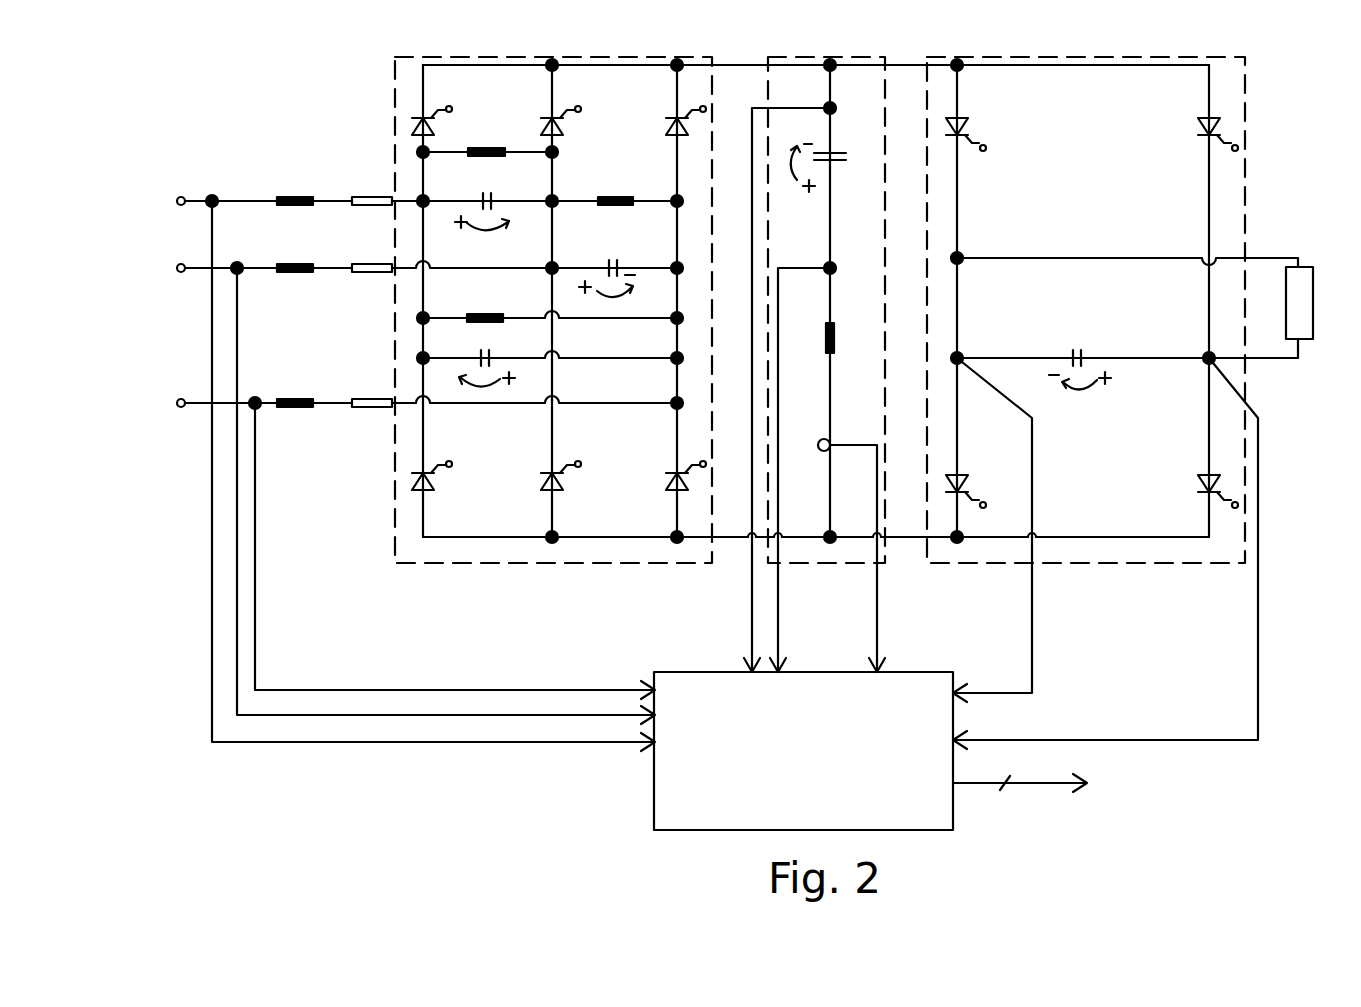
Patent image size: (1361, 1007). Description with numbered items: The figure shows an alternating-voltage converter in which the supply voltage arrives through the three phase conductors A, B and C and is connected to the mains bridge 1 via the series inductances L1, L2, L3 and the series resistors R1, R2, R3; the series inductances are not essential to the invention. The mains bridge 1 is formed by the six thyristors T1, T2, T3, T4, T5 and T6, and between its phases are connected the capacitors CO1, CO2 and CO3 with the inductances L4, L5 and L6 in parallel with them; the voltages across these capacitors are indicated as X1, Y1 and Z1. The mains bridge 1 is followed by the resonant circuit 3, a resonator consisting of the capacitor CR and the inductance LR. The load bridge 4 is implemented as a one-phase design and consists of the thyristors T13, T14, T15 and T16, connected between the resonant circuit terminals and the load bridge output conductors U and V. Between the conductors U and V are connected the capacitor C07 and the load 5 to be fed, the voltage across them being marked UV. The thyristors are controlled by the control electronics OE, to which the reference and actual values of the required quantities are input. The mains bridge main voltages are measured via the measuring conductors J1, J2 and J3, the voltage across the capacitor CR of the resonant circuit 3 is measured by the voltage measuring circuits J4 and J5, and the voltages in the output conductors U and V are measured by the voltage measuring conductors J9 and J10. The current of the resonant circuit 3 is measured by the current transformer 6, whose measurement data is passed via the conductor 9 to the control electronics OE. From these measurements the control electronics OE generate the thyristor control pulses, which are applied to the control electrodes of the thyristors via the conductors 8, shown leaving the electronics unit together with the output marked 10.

The mains bridge 1 is at (393, 80).
The resonant circuit 3 is at (802, 56).
The load bridge 4 is at (1247, 135).
The load 5 is at (1313, 310).
The current transformer 6 is at (829, 440).
The conductors 8 is at (1027, 782).
The conductor 9 is at (878, 590).
The control output signal lines 10 is at (992, 802).
The phase conductor A is at (246, 202).
The phase conductor B is at (245, 269).
The phase conductor C is at (245, 404).
The series inductance L1 is at (294, 186).
The series inductance L2 is at (294, 253).
The series inductance L3 is at (294, 388).
The series resistor R1 is at (386, 186).
The series resistor R2 is at (371, 253).
The series resistor R3 is at (371, 388).
The thyristor T1 is at (418, 122).
The thyristor T2 is at (548, 127).
The thyristor T3 is at (672, 127).
The thyristor T4 is at (416, 478).
The thyristor T5 is at (546, 480).
The thyristor T6 is at (671, 480).
The thyristor T13 is at (968, 128).
The thyristor T14 is at (1198, 130).
The thyristor T15 is at (968, 484).
The thyristor T16 is at (1198, 487).
The inductance L4 is at (485, 137).
The inductance L5 is at (614, 186).
The inductance L6 is at (484, 304).
The capacitor CO1 is at (481, 198).
The capacitor CO2 is at (606, 262).
The capacitor CO3 is at (497, 360).
The capacitor voltage X1 is at (482, 240).
The capacitor voltage Y1 is at (607, 302).
The capacitor voltage Z1 is at (487, 392).
The capacitor CR is at (838, 163).
The inductance LR is at (835, 326).
The capacitor C07 is at (1084, 353).
The output voltage UV is at (1080, 396).
The load bridge output conductor U is at (1228, 257).
The load bridge output conductor V is at (1230, 357).
The measuring conductor J1 is at (210, 493).
The measuring conductor J2 is at (239, 538).
The measuring conductor J3 is at (258, 594).
The voltage measuring circuit J4 is at (748, 585).
The voltage measuring circuit J5 is at (779, 585).
The voltage measuring conductor J9 is at (1033, 627).
The voltage measuring conductor J10 is at (1259, 612).
The control electronics OE is at (803, 751).